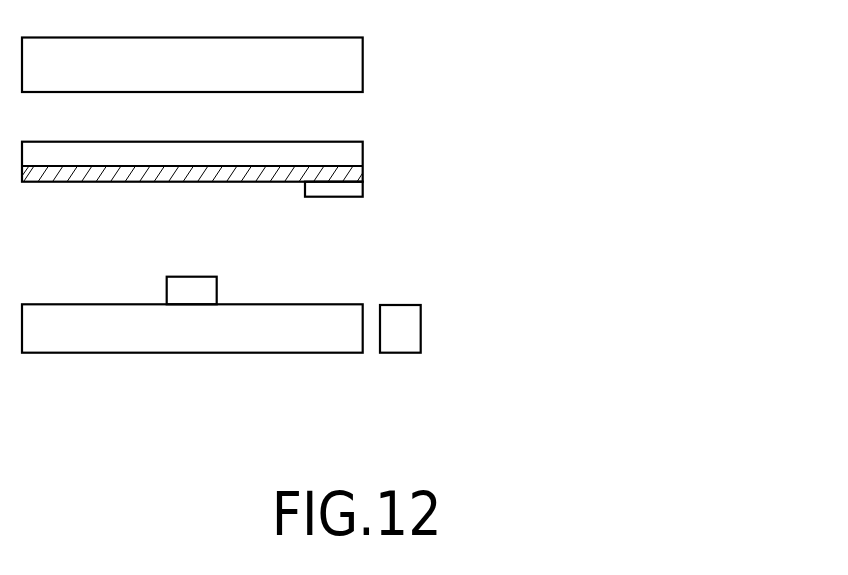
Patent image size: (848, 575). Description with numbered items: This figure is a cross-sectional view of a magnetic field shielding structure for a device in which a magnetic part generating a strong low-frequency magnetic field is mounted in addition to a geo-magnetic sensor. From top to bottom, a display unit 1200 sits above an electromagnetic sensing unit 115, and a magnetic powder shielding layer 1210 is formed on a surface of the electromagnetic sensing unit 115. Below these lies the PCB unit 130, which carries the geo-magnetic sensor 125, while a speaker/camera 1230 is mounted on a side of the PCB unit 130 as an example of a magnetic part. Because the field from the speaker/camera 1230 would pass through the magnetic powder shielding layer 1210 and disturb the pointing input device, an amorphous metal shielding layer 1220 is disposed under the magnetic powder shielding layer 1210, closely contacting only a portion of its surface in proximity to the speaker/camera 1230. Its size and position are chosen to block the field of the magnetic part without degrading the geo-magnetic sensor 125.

The display unit 1200 is at (350, 71).
The electromagnetic sensing unit 115 is at (351, 155).
The magnetic powder shielding layer 1210 is at (353, 175).
The amorphous metal shielding layer 1220 is at (363, 192).
The geo-magnetic sensor 125 is at (210, 292).
The PCB unit 130 is at (110, 335).
The speaker/camera 1230 is at (413, 332).